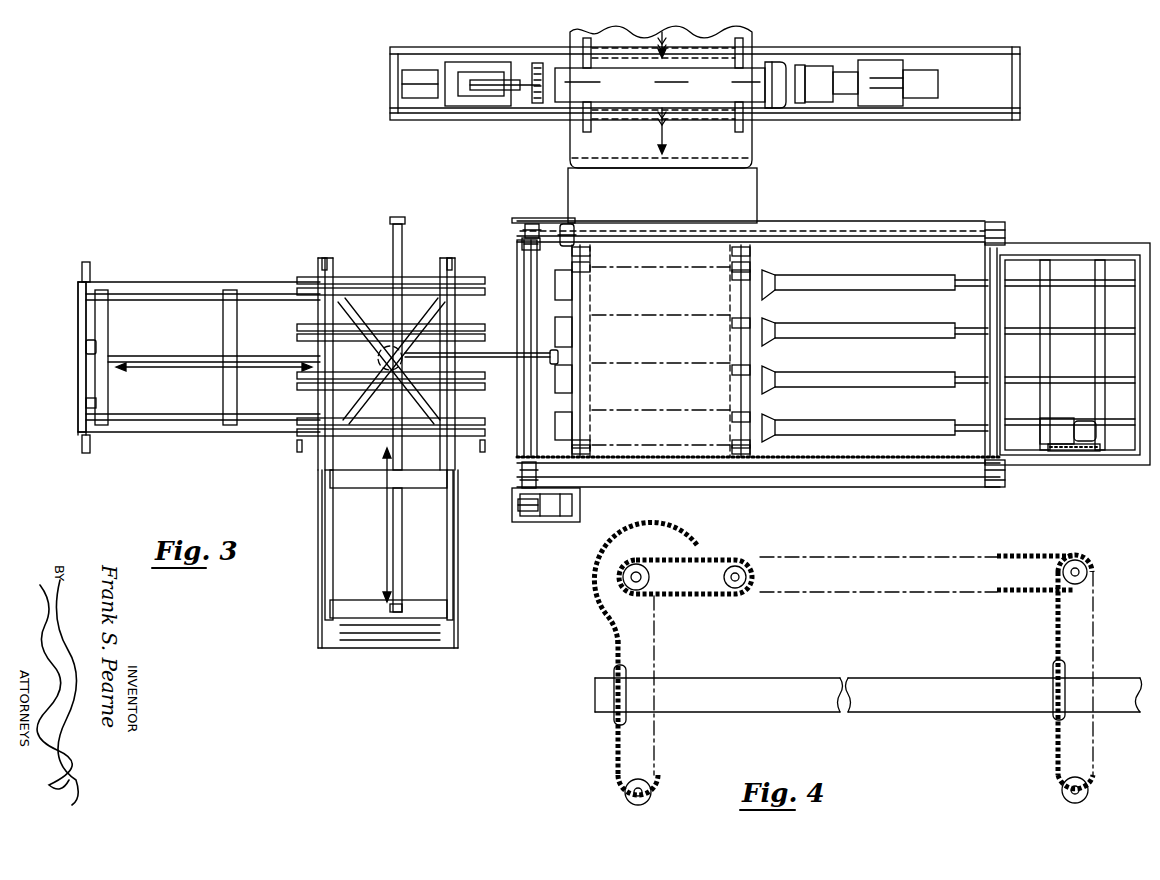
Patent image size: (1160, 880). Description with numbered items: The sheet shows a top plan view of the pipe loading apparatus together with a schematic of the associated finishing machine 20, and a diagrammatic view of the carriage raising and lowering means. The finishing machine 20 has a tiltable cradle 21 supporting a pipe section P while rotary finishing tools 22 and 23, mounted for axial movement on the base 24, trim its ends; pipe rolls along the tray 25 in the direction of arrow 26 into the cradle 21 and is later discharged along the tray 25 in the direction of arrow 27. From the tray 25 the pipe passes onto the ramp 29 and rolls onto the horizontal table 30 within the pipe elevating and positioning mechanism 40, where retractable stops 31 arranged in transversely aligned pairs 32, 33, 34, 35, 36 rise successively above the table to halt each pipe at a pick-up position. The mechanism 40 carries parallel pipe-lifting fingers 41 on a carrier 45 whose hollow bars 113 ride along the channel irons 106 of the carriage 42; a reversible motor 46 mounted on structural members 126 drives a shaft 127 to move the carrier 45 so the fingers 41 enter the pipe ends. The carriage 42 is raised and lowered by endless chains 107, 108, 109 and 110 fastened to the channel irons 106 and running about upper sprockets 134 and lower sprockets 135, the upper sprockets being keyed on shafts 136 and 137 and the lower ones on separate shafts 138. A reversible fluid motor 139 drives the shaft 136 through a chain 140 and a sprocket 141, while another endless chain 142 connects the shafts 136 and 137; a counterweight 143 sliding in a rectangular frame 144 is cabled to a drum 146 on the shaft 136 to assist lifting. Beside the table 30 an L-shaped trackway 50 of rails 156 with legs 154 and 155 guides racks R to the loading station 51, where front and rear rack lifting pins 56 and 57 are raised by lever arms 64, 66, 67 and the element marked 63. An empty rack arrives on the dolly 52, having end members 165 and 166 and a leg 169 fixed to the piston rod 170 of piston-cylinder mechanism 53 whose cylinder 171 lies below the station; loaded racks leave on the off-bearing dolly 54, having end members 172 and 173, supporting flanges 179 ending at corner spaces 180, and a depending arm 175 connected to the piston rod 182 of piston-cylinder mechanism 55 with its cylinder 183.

In FIG. 3, the finishing machine 20 is at (540, 118).
In FIG. 3, the tiltable cradle 21 is at (690, 118).
In FIG. 3, the rotary finishing tool 22 is at (540, 62).
In FIG. 3, the rotary finishing tool 23 is at (800, 66).
In FIG. 3, the base 24 is at (820, 118).
In FIG. 3, the tray 25 is at (757, 140).
In FIG. 3, the arrow 26 is at (664, 52).
In FIG. 3, the arrow 27 is at (660, 130).
In FIG. 3, the ramp 29 is at (690, 183).
In FIG. 3, the table 30 is at (672, 262).
In FIG. 3, the retractable stops 31 is at (580, 260).
In FIG. 3, the pair of stops 32 is at (740, 448).
In FIG. 3, the pair of stops 33 is at (585, 402).
In FIG. 3, the pair of stops 34 is at (585, 357).
In FIG. 3, the pair of stops 35 is at (585, 310).
In FIG. 3, the pair of stops 36 is at (705, 263).
In FIG. 3, the pipe elevating and positioning mechanism 40 is at (865, 222).
In FIG. 3, the pipe-lifting fingers 41 is at (850, 290).
In FIG. 4, the carriage 42 is at (868, 669).
In FIG. 3, the carrier 45 is at (1033, 463).
In FIG. 3, the motor 46 is at (1082, 422).
In FIG. 3, the L-shaped trackway 50 is at (254, 280).
In FIG. 3, the loading station 51 is at (362, 463).
In FIG. 3, the dolly 52 is at (150, 280).
In FIG. 3, the piston-cylinder mechanism 53 is at (495, 348).
In FIG. 3, the dolly 54 is at (389, 628).
In FIG. 3, the piston-cylinder mechanism 55 is at (390, 240).
In FIG. 3, the rack lifting pins 56 is at (302, 440).
In FIG. 3, the rack lifting pins 57 is at (323, 272).
In FIG. 3, the diagonal brace end 63 is at (442, 395).
In FIG. 3, the lever arm 64 is at (297, 390).
In FIG. 3, the lever arm 66 is at (355, 305).
In FIG. 3, the lever arm 67 is at (420, 318).
In FIG. 3, the channel irons 106 is at (805, 226).
In FIG. 4, the channel irons 106 is at (772, 690).
In FIG. 3, the endless chain 107 is at (520, 478).
In FIG. 4, the endless chain 107 is at (613, 668).
In FIG. 3, the endless chain 108 is at (1005, 468).
In FIG. 4, the endless chain 108 is at (1052, 662).
In FIG. 3, the endless chain 109 is at (525, 228).
In FIG. 3, the endless chain 110 is at (1005, 233).
In FIG. 3, the hollow bars 113 is at (1112, 255).
In FIG. 3, the structural members 126 is at (1046, 262).
In FIG. 3, the shaft 127 is at (1098, 262).
In FIG. 4, the upper sprockets 134 is at (630, 580).
In FIG. 4, the lower sprockets 135 is at (650, 792).
In FIG. 3, the shaft 136 is at (524, 246).
In FIG. 4, the shaft 136 is at (652, 577).
In FIG. 3, the shaft 137 is at (985, 404).
In FIG. 4, the shaft 137 is at (1082, 562).
In FIG. 4, the shafts 138 is at (624, 790).
In FIG. 3, the reversible fluid motor 139 is at (568, 224).
In FIG. 4, the reversible fluid motor 139 is at (748, 577).
In FIG. 3, the chain 140 is at (548, 217).
In FIG. 4, the chain 140 is at (690, 548).
In FIG. 4, the sprocket 141 is at (652, 545).
In FIG. 3, the endless chain 142 is at (885, 465).
In FIG. 4, the endless chain 142 is at (1008, 552).
In FIG. 3, the counterweight 143 is at (580, 506).
In FIG. 3, the rectangular frame 144 is at (565, 523).
In FIG. 3, the drum 146 is at (522, 512).
In FIG. 3, the leg 154 is at (78, 316).
In FIG. 3, the leg 155 is at (422, 648).
In FIG. 3, the rails 156 is at (84, 270).
In FIG. 3, the end member 165 is at (92, 403).
In FIG. 3, the end member 166 is at (230, 395).
In FIG. 3, the leg 169 is at (88, 352).
In FIG. 3, the piston rod 170 is at (150, 370).
In FIG. 3, the cylinder 171 is at (558, 352).
In FIG. 3, the end member 172 is at (416, 482).
In FIG. 3, the end member 173 is at (372, 618).
In FIG. 3, the depending arm 175 is at (390, 608).
In FIG. 3, the flange 179 is at (327, 588).
In FIG. 3, the corner spaces 180 is at (320, 492).
In FIG. 3, the piston rod 182 is at (387, 528).
In FIG. 3, the cylinder 183 is at (402, 228).
In FIG. 3, the section of green clay sewer pipe P is at (690, 80).
In FIG. 3, the loading rack R is at (300, 328).